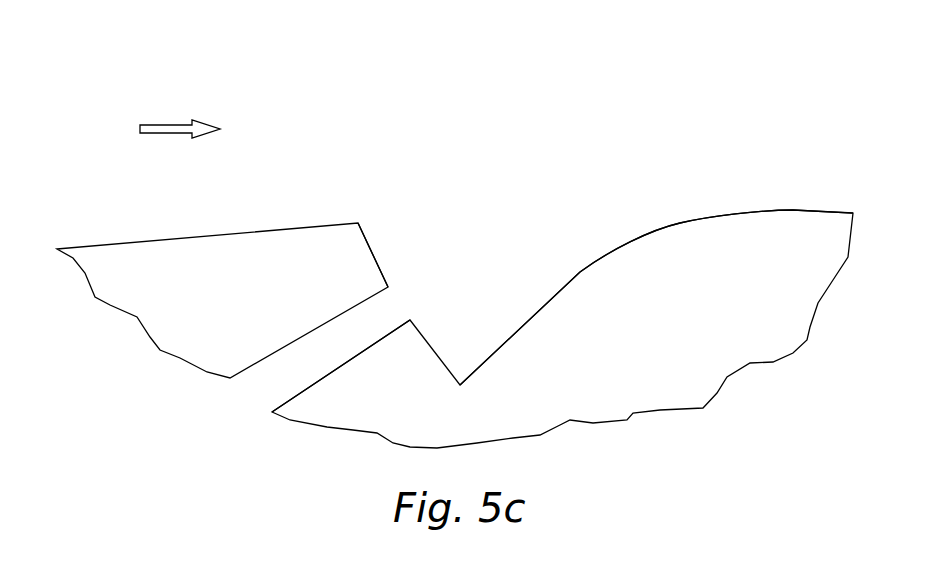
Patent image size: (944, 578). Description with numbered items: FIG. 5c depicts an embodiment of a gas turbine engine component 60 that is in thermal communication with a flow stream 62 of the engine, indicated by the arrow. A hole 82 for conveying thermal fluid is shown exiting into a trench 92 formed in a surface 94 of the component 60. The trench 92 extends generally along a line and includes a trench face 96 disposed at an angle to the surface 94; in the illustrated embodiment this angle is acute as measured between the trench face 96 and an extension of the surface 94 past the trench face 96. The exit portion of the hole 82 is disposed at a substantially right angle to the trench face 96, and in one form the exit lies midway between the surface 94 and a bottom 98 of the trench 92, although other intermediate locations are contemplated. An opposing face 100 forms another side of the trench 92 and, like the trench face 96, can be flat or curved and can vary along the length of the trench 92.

The component 60 is at (335, 120).
The flow stream 62 is at (162, 122).
The hole 82 is at (352, 333).
The trench 92 is at (462, 270).
The surface 94 is at (148, 235).
The trench face 96 is at (370, 250).
The bottom 98 is at (526, 373).
The opposing face 100 is at (547, 293).